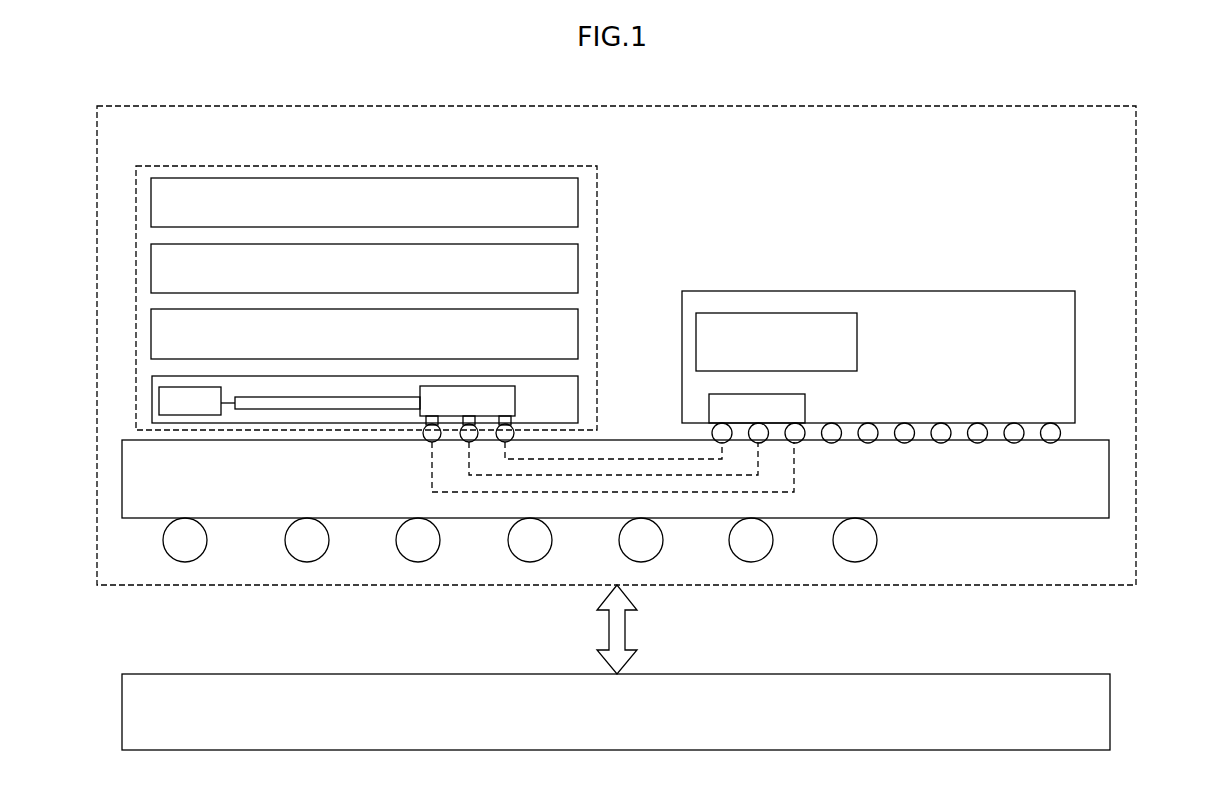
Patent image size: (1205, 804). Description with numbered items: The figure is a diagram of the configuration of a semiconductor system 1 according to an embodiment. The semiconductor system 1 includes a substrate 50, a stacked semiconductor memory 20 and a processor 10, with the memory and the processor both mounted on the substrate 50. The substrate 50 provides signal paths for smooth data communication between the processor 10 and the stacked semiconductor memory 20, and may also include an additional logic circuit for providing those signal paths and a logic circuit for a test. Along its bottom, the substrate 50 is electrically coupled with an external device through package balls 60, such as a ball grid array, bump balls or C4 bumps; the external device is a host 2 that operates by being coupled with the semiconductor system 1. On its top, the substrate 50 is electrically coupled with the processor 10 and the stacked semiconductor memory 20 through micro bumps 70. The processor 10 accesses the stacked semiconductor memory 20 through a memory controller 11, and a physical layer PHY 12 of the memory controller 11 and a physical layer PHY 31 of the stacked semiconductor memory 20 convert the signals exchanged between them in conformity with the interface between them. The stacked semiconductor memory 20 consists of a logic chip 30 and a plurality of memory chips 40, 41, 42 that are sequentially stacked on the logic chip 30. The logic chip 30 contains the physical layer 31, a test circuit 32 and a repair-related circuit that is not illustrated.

The semiconductor system 1 is at (1087, 106).
The host 2 is at (1110, 707).
The processor 10 is at (1015, 291).
The memory controller 11 is at (857, 340).
The physical layer PHY 12 is at (805, 407).
The stacked semiconductor memory 20 is at (518, 166).
The logic chip 30 is at (578, 398).
The physical layer PHY 31 is at (515, 398).
The test circuit 32 is at (159, 403).
The memory chip 40 is at (578, 332).
The memory chip 41 is at (578, 267).
The memory chip 42 is at (578, 207).
The substrate 50 is at (1109, 478).
The package balls 60 is at (877, 541).
The micro bumps 70 is at (1061, 433).